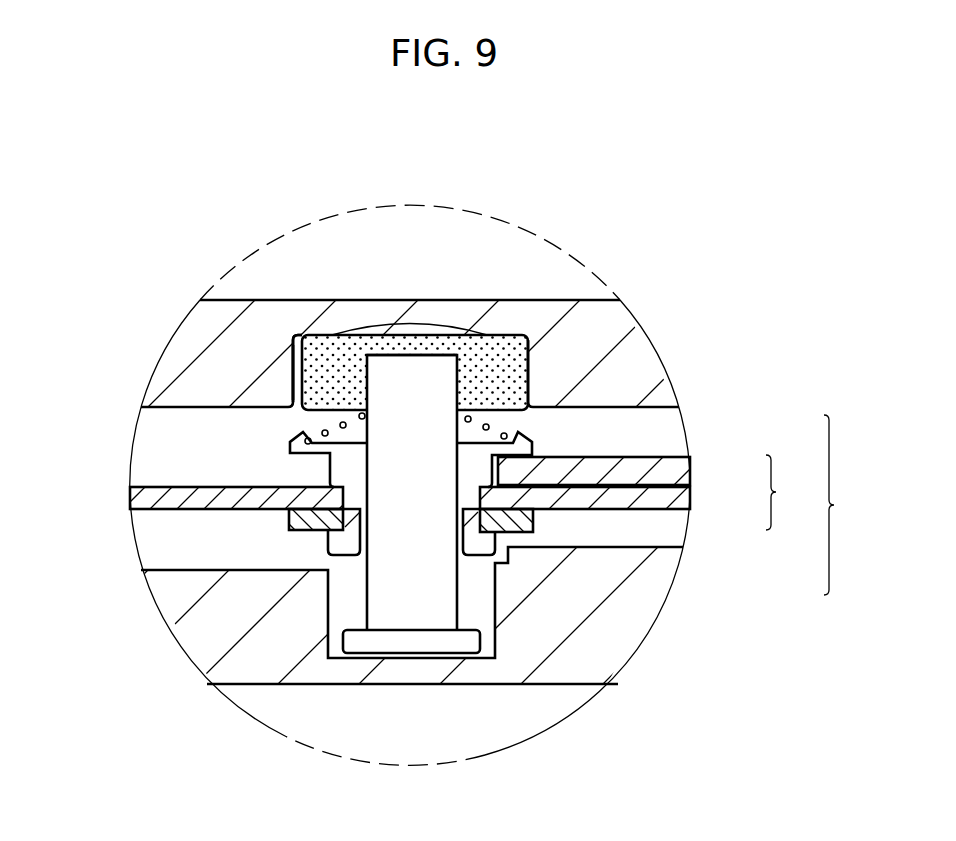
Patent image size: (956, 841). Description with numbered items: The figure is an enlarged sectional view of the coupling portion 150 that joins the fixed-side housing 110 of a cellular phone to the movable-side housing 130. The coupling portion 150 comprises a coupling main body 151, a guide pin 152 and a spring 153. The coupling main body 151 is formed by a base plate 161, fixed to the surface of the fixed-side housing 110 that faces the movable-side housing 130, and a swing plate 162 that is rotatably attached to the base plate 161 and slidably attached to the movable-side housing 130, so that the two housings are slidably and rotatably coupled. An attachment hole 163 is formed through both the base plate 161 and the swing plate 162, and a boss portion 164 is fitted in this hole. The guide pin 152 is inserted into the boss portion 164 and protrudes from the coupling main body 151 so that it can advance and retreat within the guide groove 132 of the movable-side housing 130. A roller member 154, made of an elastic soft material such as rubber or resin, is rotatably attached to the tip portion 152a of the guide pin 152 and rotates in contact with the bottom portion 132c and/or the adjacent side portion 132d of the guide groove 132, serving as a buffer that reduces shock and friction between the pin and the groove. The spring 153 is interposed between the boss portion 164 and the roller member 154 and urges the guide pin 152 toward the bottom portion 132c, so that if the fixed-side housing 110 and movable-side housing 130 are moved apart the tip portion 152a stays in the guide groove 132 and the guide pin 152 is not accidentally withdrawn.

The fixed-side housing 110 is at (208, 618).
The movable-side housing 130 is at (205, 338).
The guide groove 132 is at (300, 337).
The bottom portion 132c is at (385, 340).
The side portion 132d is at (305, 366).
The coupling portion 150 is at (847, 505).
The coupling main body 151 is at (789, 492).
The guide pin 152 is at (413, 602).
The tip portion 152a is at (420, 355).
The spring 153 is at (490, 428).
The roller member 154 is at (530, 362).
The base plate 161 is at (680, 497).
The swing plate 162 is at (680, 472).
The attachment hole 163 is at (345, 506).
The boss portion 164 is at (343, 467).